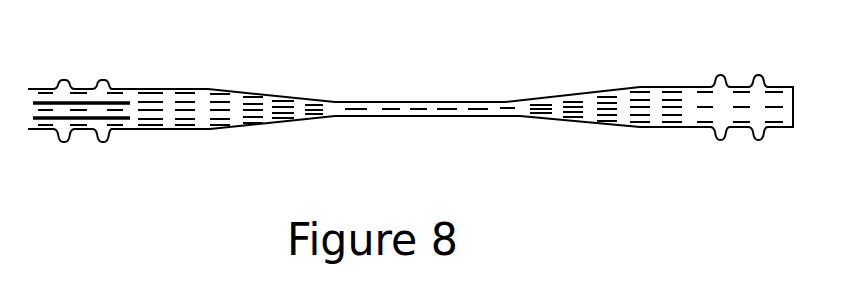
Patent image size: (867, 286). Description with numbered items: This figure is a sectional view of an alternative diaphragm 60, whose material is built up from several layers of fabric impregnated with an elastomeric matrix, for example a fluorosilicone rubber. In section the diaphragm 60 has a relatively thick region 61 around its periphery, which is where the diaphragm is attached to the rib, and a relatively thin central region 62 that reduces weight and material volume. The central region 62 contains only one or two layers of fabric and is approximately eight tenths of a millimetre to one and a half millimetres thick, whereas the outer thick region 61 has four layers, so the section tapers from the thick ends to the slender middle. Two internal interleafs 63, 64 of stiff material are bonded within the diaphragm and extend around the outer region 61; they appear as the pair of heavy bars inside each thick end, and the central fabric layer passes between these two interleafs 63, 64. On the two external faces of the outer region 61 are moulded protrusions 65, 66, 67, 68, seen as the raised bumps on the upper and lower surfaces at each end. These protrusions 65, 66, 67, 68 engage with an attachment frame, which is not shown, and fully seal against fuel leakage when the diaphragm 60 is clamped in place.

The diaphragm 60 is at (288, 76).
The thick region 61 is at (150, 89).
The central region 62 is at (415, 100).
The internal interleaf 63 is at (82, 100).
The internal interleaf 64 is at (83, 118).
The moulded protrusion 65 is at (720, 82).
The moulded protrusion 66 is at (757, 82).
The moulded protrusion 67 is at (720, 138).
The moulded protrusion 68 is at (757, 138).